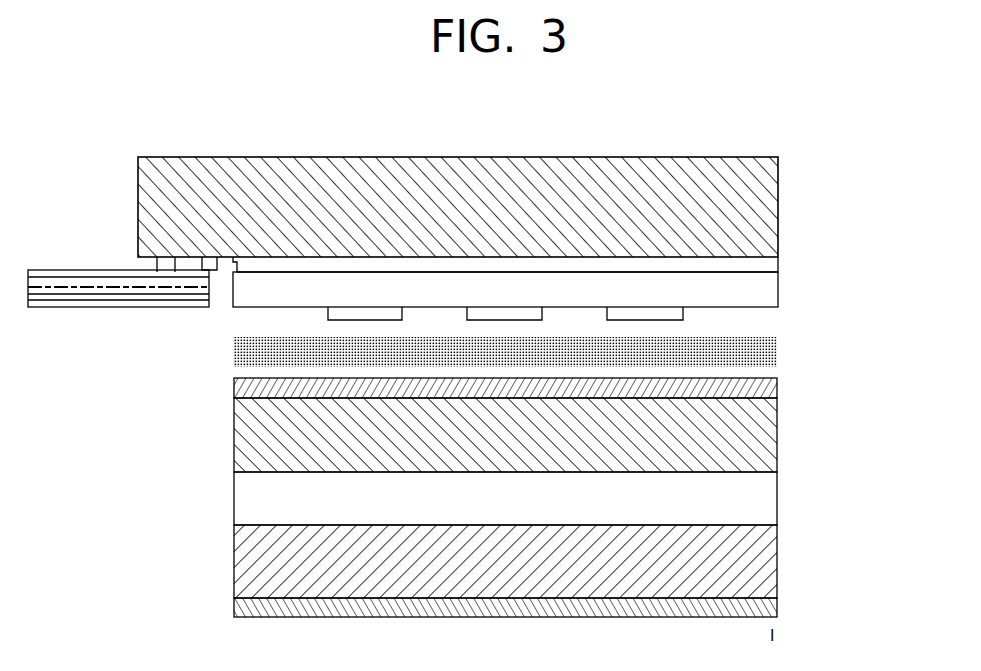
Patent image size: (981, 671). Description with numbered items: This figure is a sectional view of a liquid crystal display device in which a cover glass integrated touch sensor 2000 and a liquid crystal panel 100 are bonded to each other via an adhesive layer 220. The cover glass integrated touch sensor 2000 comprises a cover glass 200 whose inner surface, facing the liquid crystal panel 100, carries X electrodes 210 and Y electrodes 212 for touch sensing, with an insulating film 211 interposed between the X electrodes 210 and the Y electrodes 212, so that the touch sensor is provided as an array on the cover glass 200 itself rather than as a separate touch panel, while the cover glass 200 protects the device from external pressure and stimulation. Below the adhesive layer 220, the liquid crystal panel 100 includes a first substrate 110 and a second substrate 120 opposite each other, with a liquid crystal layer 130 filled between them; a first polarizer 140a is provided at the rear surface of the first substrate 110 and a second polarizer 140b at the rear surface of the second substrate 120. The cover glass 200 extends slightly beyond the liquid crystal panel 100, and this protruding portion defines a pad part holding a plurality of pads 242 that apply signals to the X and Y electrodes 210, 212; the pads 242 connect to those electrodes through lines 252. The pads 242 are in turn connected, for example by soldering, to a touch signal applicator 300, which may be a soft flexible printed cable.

The liquid crystal panel 100 is at (556, 498).
The first substrate 110 is at (777, 572).
The second substrate 120 is at (777, 437).
The liquid crystal layer 130 is at (768, 501).
The first polarizer 140a is at (536, 608).
The second polarizer 140b is at (777, 390).
The cover glass 200 is at (778, 206).
The X electrodes 210 is at (776, 268).
The insulating film 211 is at (776, 293).
The Y electrodes 212 is at (668, 314).
The adhesive layer 220 is at (770, 353).
The pads 242 is at (175, 267).
The lines 252 is at (212, 267).
The touch signal applicator 300 is at (118, 296).
The cover glass integrated touch sensor 2000 is at (512, 242).